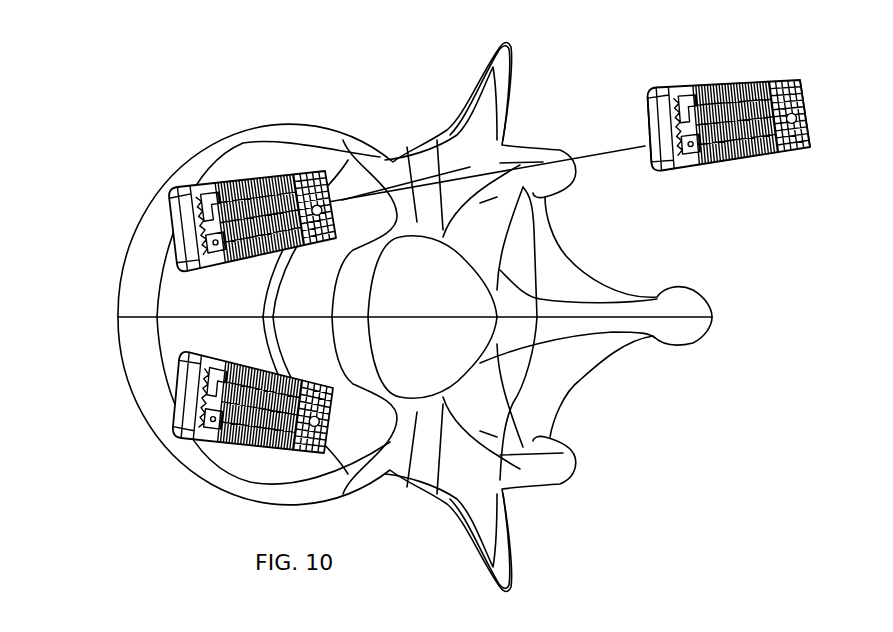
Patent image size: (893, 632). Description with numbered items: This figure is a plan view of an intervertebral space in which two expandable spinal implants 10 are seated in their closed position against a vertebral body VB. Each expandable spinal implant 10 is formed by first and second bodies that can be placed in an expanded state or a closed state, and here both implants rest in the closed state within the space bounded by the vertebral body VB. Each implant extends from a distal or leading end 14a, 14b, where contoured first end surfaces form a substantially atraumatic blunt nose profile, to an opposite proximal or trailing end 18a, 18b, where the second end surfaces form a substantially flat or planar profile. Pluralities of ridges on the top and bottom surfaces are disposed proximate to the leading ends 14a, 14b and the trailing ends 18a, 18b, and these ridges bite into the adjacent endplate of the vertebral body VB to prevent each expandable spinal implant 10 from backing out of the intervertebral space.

The expandable spinal implant 10 is at (211, 179).
The distal or leading end of first body 14a is at (632, 101).
The distal or leading end of second body 14b is at (650, 190).
The proximal or trailing end of first body 18a is at (811, 82).
The proximal or trailing end of second body 18b is at (814, 161).
The vertebral body VB is at (104, 262).